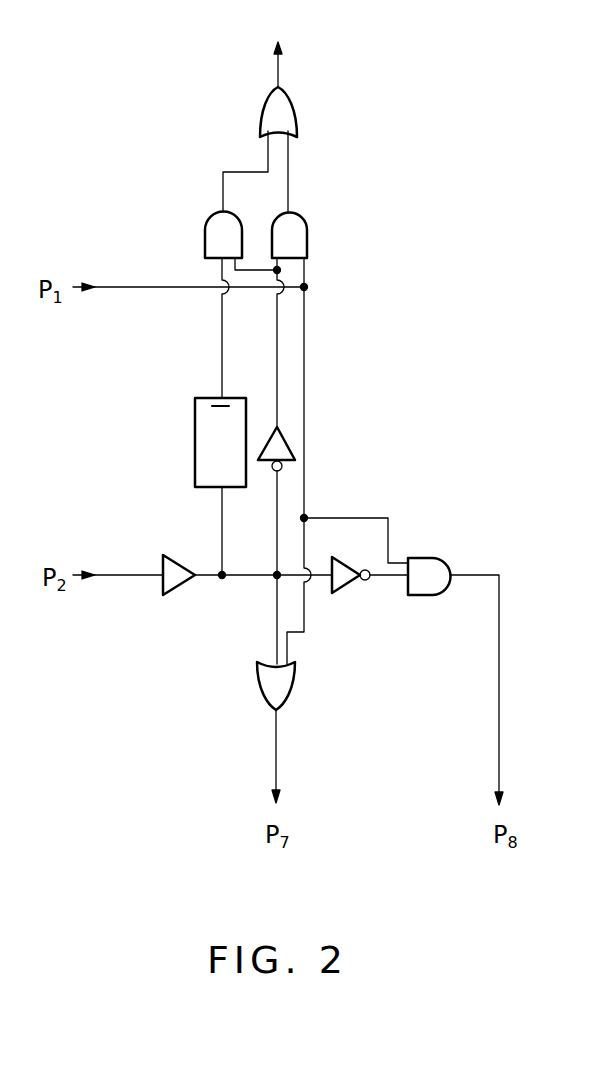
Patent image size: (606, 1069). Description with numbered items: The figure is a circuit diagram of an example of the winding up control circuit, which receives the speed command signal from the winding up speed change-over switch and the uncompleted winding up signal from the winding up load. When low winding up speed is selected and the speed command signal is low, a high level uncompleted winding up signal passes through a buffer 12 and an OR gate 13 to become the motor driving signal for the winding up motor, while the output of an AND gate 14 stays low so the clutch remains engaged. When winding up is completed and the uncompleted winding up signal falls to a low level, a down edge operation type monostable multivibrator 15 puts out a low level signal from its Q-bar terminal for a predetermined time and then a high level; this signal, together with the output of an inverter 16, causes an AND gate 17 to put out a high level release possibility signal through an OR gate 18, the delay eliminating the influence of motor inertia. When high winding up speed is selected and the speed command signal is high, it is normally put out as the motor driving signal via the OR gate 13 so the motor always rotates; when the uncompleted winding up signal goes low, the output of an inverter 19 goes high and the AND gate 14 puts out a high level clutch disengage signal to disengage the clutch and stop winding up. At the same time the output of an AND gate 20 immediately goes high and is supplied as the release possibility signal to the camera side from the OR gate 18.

The buffer 12 is at (178, 591).
The OR gate 13 is at (295, 688).
The AND gate 14 is at (434, 558).
The monostable multivibrator 15 is at (195, 466).
The inverter 16 is at (295, 443).
The AND gate 17 is at (205, 229).
The OR gate 18 is at (297, 115).
The inverter 19 is at (347, 590).
The AND gate 20 is at (307, 237).